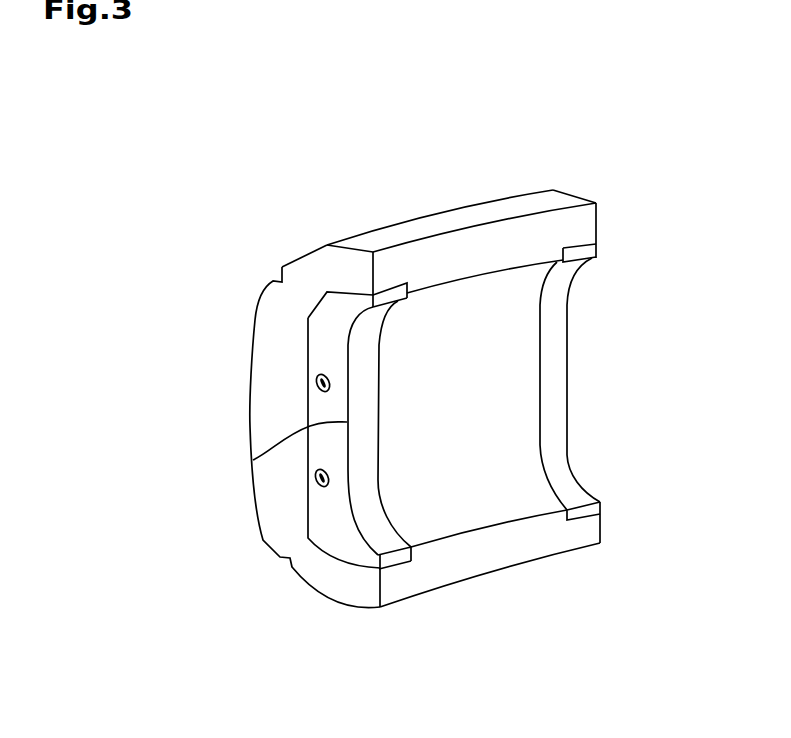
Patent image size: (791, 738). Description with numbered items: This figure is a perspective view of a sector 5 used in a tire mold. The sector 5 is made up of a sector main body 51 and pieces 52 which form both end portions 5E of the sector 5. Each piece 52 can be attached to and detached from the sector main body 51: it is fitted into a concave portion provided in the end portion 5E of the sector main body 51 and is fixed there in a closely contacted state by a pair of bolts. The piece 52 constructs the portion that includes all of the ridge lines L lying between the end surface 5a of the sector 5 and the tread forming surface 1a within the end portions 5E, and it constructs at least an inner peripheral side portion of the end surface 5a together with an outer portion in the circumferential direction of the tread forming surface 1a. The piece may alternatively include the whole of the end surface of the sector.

The sector 5 is at (330, 222).
The end surface 5a is at (267, 352).
The end portion 5E is at (618, 262).
The sector main body 51 is at (484, 237).
The piece 52 is at (558, 338).
The tread forming surface 1a is at (492, 502).
The ridge line L is at (253, 460).